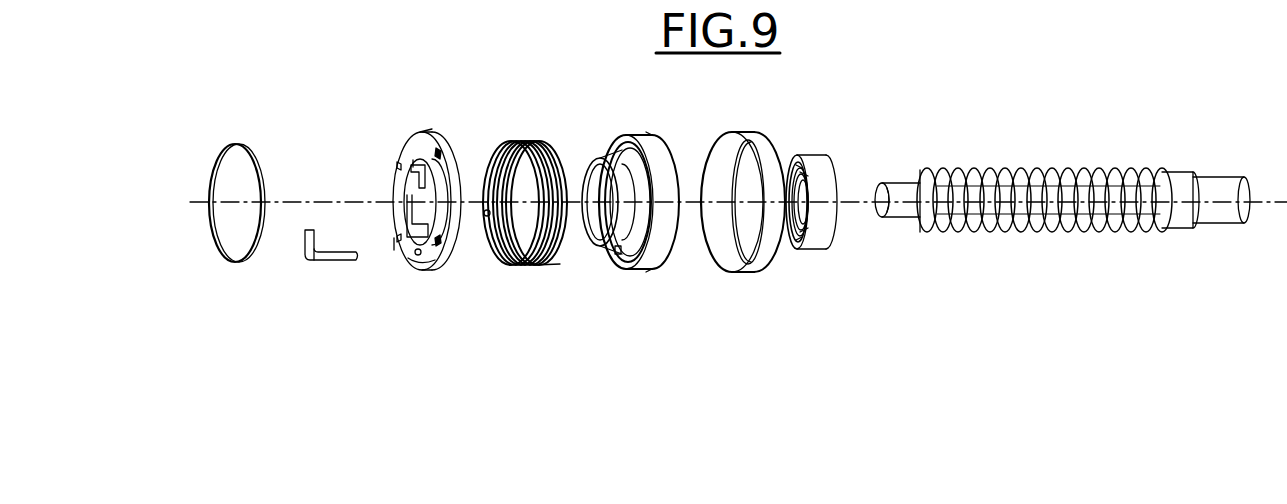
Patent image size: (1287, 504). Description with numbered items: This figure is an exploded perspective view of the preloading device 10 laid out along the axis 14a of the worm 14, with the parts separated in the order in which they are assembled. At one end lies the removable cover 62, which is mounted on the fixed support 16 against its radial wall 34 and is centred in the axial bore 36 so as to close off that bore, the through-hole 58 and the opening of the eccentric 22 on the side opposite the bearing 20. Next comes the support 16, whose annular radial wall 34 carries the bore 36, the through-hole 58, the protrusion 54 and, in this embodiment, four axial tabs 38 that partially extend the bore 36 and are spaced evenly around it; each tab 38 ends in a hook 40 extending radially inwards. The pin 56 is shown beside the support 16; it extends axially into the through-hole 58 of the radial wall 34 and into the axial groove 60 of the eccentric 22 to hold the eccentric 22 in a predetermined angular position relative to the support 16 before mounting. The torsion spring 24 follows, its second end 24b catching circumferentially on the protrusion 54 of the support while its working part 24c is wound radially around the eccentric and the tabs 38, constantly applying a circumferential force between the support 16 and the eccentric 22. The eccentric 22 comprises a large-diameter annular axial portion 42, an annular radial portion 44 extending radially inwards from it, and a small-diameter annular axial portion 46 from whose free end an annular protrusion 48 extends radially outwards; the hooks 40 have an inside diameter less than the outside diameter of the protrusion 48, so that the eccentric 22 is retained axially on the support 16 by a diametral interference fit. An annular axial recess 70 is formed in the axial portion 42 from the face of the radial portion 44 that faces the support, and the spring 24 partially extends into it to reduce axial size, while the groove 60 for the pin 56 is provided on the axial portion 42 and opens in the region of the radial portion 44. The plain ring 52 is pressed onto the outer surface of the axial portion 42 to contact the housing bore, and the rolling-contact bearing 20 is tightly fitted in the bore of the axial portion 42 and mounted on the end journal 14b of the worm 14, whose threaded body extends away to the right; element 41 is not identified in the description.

The device 10 is at (750, 130).
The worm 14 is at (1072, 166).
The axis of the worm 14a is at (692, 203).
The end journal 14b is at (905, 186).
The support 16 is at (440, 130).
The rolling-contact bearing 20 is at (806, 250).
The eccentric 22 is at (636, 272).
The torsion spring 24 is at (508, 266).
The second end of the spring 24b is at (487, 208).
The working part of the spring 24c is at (540, 267).
The radial wall 34 is at (413, 268).
The axial bore 36 is at (400, 217).
The axial tabs 38 is at (413, 176).
The hooks 40 is at (411, 187).
The outer surface 41 is at (423, 132).
The large-diameter annular axial portion 42 is at (654, 138).
The annular radial portion 44 is at (618, 152).
The small-diameter annular axial portion 46 is at (598, 160).
The annular protrusion 48 is at (597, 238).
The plain ring 52 is at (750, 273).
The protrusion of the support 54 is at (397, 250).
The pin 56 is at (332, 262).
The through-hole 58 is at (430, 262).
The axial groove 60 is at (617, 255).
The removable cover 62 is at (243, 143).
The annular axial recess 70 is at (622, 142).